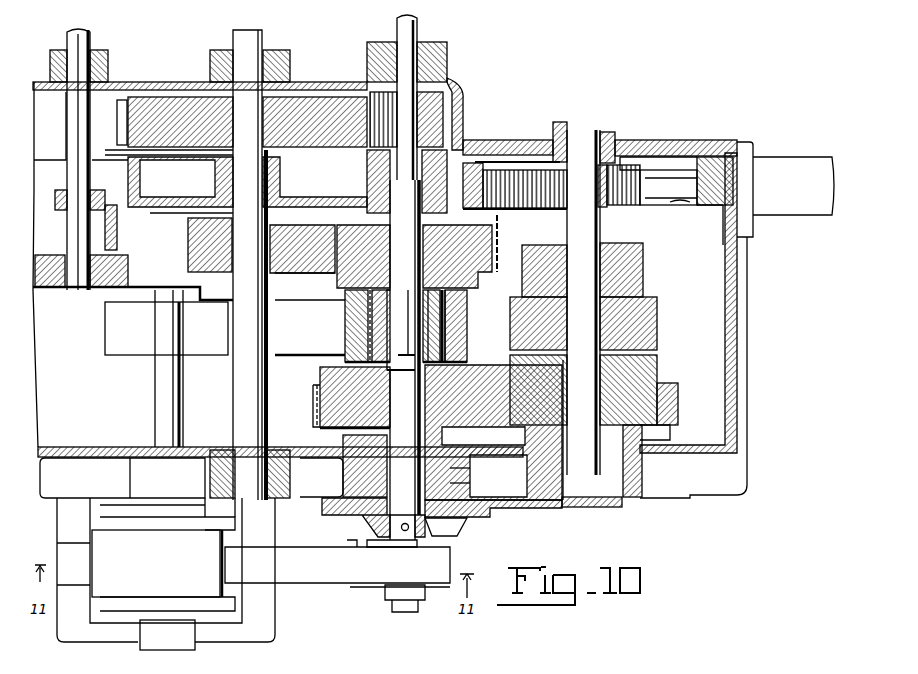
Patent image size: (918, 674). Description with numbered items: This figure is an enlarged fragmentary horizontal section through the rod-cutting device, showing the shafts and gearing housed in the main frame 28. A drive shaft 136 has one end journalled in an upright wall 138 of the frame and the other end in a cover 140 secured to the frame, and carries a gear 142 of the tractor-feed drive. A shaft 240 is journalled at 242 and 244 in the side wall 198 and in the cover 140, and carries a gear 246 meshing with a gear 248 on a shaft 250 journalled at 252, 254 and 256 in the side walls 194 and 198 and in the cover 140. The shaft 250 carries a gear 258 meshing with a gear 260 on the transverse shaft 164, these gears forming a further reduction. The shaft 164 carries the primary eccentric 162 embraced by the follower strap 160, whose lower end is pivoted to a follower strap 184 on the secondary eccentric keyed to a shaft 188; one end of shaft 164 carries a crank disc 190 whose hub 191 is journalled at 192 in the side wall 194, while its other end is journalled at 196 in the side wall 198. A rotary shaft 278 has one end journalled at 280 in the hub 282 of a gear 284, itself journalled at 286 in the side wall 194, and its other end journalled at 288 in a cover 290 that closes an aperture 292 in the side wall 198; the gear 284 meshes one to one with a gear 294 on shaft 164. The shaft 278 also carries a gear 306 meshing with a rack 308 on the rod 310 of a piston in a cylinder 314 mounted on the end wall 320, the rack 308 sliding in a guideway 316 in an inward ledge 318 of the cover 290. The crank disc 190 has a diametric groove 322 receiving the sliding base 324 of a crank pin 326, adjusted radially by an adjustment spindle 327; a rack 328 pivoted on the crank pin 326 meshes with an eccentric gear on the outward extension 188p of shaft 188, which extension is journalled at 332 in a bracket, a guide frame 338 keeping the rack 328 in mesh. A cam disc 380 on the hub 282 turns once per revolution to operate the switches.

The main frame 28 is at (742, 398).
The shaft 136 is at (78, 128).
The upright wall 138 is at (100, 290).
The cover 140 is at (160, 80).
The gear 142 is at (120, 233).
The follower strap 160 is at (465, 305).
The primary eccentric 162 is at (440, 332).
The transverse shaft 164 is at (428, 357).
The follower strap 184 is at (305, 348).
The shaft 188 is at (160, 394).
The outward extension 188p is at (158, 507).
The crank disc 190 is at (492, 508).
The hub 191 is at (472, 467).
The journal 192 is at (472, 484).
The side wall 194 is at (340, 480).
The journal 196 is at (440, 205).
The side wall 198 is at (365, 187).
The shaft 240 is at (410, 30).
The journal 242 is at (465, 142).
The journal 244 is at (448, 70).
The gear 246 is at (464, 100).
The gear 248 is at (305, 110).
The shaft 250 is at (250, 62).
The journal 252 is at (318, 452).
The journal 254 is at (228, 173).
The journal 256 is at (296, 60).
The gear 258 is at (195, 242).
The gear 260 is at (488, 242).
The rotary shaft 278 is at (645, 295).
The journal 280 is at (540, 420).
The hub 282 is at (660, 435).
The gear 284 is at (670, 400).
The journal 286 is at (640, 475).
The journal 288 is at (616, 136).
The cover 290 is at (672, 140).
The aperture 292 is at (555, 158).
The gear 294 is at (318, 400).
The gear 306 is at (612, 205).
The rack 308 is at (650, 210).
The rod 310 is at (671, 188).
The cylinder 314 is at (792, 160).
The guideway 316 is at (698, 208).
The inward ledge 318 is at (655, 215).
The end wall 320 is at (740, 254).
The diametric groove 322 is at (448, 540).
The sliding base 324 is at (410, 540).
The crank pin 326 is at (420, 545).
The adjustment spindle 327 is at (402, 530).
The rack 328 is at (312, 584).
The journal 332 is at (180, 640).
The guide frame 338 is at (166, 570).
The cam disc 380 is at (610, 507).